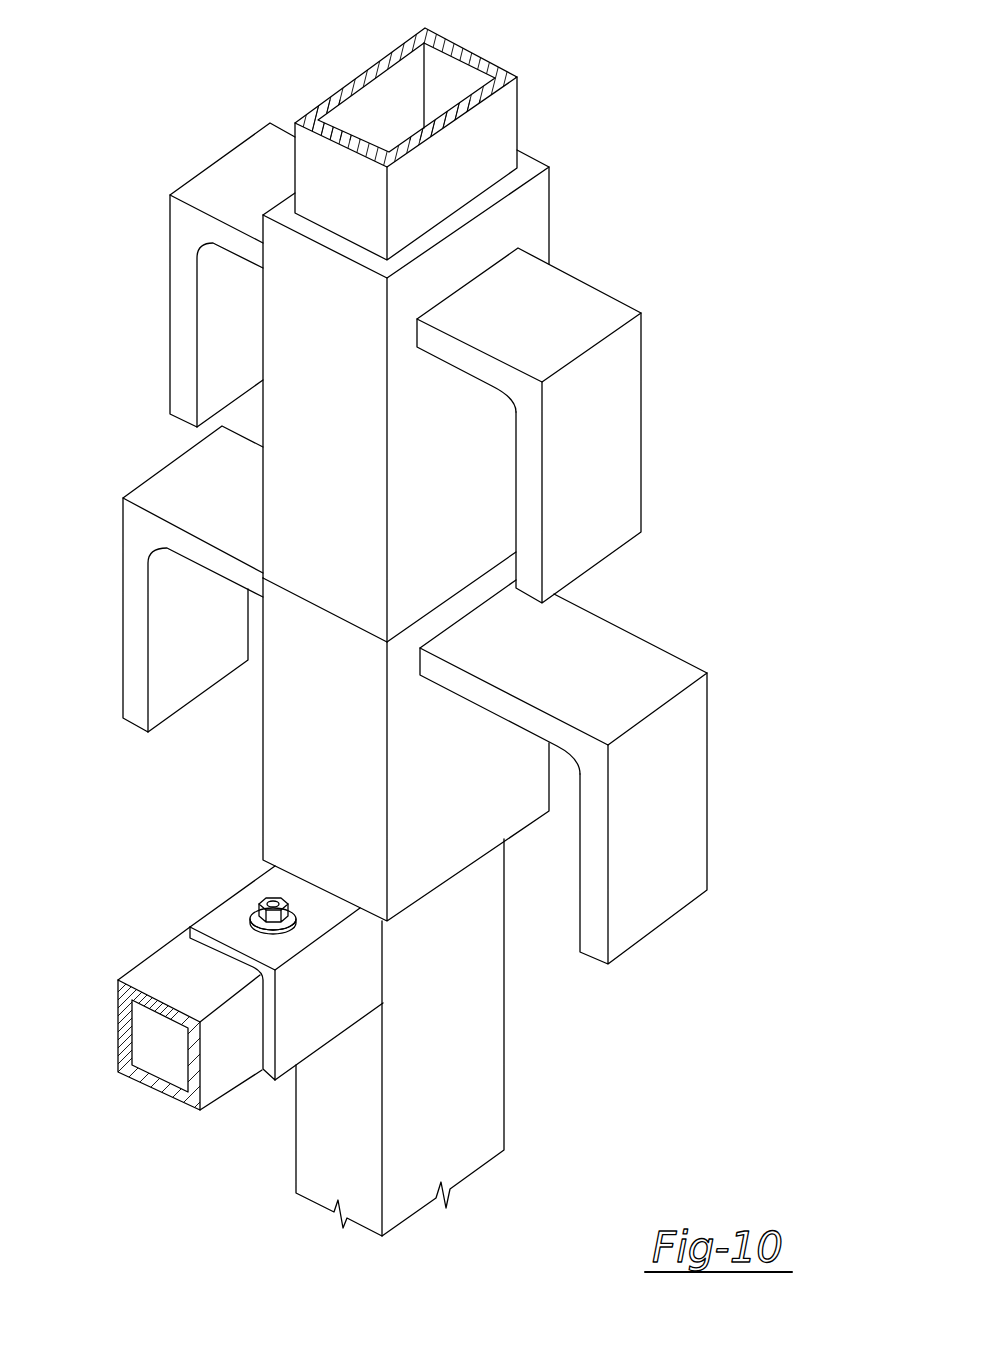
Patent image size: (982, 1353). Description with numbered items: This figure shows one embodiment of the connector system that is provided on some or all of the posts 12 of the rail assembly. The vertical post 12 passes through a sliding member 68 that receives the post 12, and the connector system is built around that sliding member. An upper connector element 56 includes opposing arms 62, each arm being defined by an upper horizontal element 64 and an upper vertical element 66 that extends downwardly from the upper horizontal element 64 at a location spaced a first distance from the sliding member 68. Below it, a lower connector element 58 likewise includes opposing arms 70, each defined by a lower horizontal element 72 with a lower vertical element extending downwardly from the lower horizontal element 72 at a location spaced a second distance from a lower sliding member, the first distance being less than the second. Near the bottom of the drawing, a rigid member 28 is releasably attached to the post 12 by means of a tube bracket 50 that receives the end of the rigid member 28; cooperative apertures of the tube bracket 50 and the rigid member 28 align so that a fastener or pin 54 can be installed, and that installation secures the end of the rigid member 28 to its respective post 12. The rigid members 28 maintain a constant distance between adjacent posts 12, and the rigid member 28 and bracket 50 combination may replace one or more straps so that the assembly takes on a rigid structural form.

The post 12 is at (337, 1140).
The rigid member 28 is at (248, 1058).
The tube bracket 50 is at (338, 1011).
The fastener or pin 54 is at (275, 903).
The upper connector element 56 is at (142, 316).
The lower connector element 58 is at (240, 762).
The opposing arms 62 is at (540, 406).
The upper horizontal element 64 is at (541, 329).
The upper vertical element 66 is at (607, 466).
The sliding member 68 is at (336, 394).
The opposing arms 70 is at (575, 766).
The lower horizontal element 72 is at (585, 673).